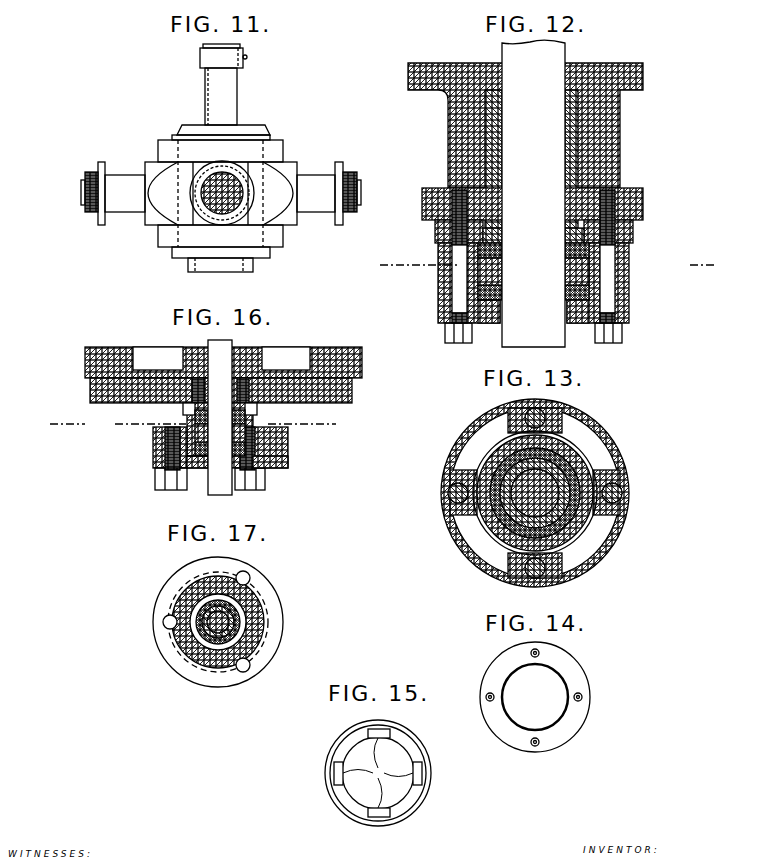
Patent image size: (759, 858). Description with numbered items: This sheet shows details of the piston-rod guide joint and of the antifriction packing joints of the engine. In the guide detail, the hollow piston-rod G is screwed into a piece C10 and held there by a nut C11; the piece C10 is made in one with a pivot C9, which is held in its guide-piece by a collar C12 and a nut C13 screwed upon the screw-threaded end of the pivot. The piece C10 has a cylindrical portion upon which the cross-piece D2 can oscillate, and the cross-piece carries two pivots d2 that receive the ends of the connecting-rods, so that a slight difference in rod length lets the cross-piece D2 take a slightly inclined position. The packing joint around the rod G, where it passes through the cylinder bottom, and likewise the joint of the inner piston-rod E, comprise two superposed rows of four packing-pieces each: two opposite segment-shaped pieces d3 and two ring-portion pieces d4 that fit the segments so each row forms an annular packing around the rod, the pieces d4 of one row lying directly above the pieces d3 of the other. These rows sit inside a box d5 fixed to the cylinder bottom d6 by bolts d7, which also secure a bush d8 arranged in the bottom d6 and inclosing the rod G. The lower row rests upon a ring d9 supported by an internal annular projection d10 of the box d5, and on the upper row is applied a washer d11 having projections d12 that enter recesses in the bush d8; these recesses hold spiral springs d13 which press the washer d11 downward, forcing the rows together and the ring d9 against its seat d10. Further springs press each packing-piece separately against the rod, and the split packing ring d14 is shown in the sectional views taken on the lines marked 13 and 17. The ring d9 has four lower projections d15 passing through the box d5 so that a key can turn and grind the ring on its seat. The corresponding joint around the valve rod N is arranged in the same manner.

In FIG. 11, the nut C13 is at (200, 58).
In FIG. 11, the pivot C9 is at (237, 93).
In FIG. 11, the collar C12 is at (252, 128).
In FIG. 11, the cross-piece D2 is at (160, 158).
In FIG. 11, the piece C10 is at (268, 237).
In FIG. 11, the nut C11 is at (254, 195).
In FIG. 11, the inner piston-rod E is at (205, 194).
In FIG. 11, the hollow piston-rod G is at (190, 186).
In FIG. 12, the hollow piston-rod G is at (533, 193).
In FIG. 13, the hollow piston-rod G is at (518, 515).
In FIG. 11, the pivot d2 is at (311, 178).
In FIG. 12, the bush d8 is at (478, 138).
In FIG. 12, the cylinder bottom d6 is at (430, 192).
In FIG. 16, the cylinder bottom d6 is at (92, 398).
In FIG. 17, the cylinder bottom d6 is at (156, 627).
In FIG. 12, the projection d12 is at (438, 233).
In FIG. 16, the projection d12 is at (162, 372).
In FIG. 14, the projection d12 is at (540, 653).
In FIG. 12, the washer d11 is at (586, 241).
In FIG. 16, the washer d11 is at (300, 406).
In FIG. 14, the washer d11 is at (493, 673).
In FIG. 12, the box d5 is at (445, 306).
In FIG. 13, the box d5 is at (452, 455).
In FIG. 16, the box d5 is at (158, 470).
In FIG. 17, the box d5 is at (176, 596).
In FIG. 12, the spiral spring d13 is at (454, 200).
In FIG. 16, the spiral spring d13 is at (183, 368).
In FIG. 12, the packing-piece d3 is at (480, 257).
In FIG. 13, the packing-piece d3 is at (562, 458).
In FIG. 16, the packing-piece d3 is at (192, 412).
In FIG. 17, the packing-piece d3 is at (255, 600).
In FIG. 12, the packing-piece d4 is at (480, 272).
In FIG. 13, the packing-piece d4 is at (497, 458).
In FIG. 16, the packing-piece d4 is at (196, 446).
In FIG. 17, the packing-piece d4 is at (262, 644).
In FIG. 12, the section line 13 is at (560, 268).
In FIG. 12, the bolt d7 is at (462, 341).
In FIG. 13, the bolt d7 is at (526, 414).
In FIG. 16, the bolt d7 is at (160, 489).
In FIG. 17, the bolt d7 is at (166, 615).
In FIG. 12, the lower projection d15 is at (492, 325).
In FIG. 16, the lower projection d15 is at (200, 470).
In FIG. 15, the lower projection d15 is at (378, 773).
In FIG. 12, the ring d9 is at (580, 328).
In FIG. 16, the ring d9 is at (262, 468).
In FIG. 15, the ring d9 is at (347, 752).
In FIG. 12, the internal annular projection d10 is at (482, 330).
In FIG. 16, the internal annular projection d10 is at (184, 470).
In FIG. 13, the split ring d14 is at (480, 533).
In FIG. 16, the split ring d14 is at (165, 436).
In FIG. 17, the split ring d14 is at (222, 585).
In FIG. 16, the section line 17 is at (180, 428).
In FIG. 16, the valve rod N is at (220, 417).